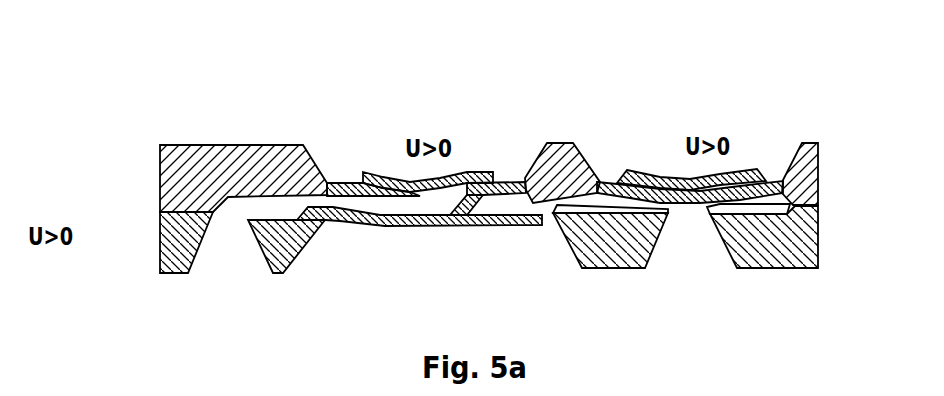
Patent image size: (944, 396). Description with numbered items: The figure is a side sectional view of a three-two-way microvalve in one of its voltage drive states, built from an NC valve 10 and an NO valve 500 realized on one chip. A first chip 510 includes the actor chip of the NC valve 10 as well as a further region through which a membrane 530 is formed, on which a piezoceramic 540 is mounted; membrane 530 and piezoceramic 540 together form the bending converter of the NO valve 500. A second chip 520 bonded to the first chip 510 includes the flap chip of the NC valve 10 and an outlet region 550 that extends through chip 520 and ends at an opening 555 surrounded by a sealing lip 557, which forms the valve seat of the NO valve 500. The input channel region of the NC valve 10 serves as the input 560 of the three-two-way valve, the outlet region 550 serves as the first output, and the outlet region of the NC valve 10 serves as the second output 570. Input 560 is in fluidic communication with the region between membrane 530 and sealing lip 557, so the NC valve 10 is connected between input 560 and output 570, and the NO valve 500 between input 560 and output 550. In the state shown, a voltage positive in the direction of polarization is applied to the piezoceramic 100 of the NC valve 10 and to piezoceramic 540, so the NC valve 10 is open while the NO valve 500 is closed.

The NC valve 10 is at (338, 132).
The piezoceramic 100 is at (460, 172).
The NO valve 500 is at (670, 117).
The chip 510 is at (158, 174).
The second chip 520 is at (160, 238).
The membrane 530 is at (778, 178).
The piezoceramic 540 is at (650, 170).
The outlet region 550 is at (700, 238).
The opening 555 is at (690, 212).
The sealing lip 557 is at (554, 213).
The input 560 is at (528, 240).
The second output 570 is at (226, 253).